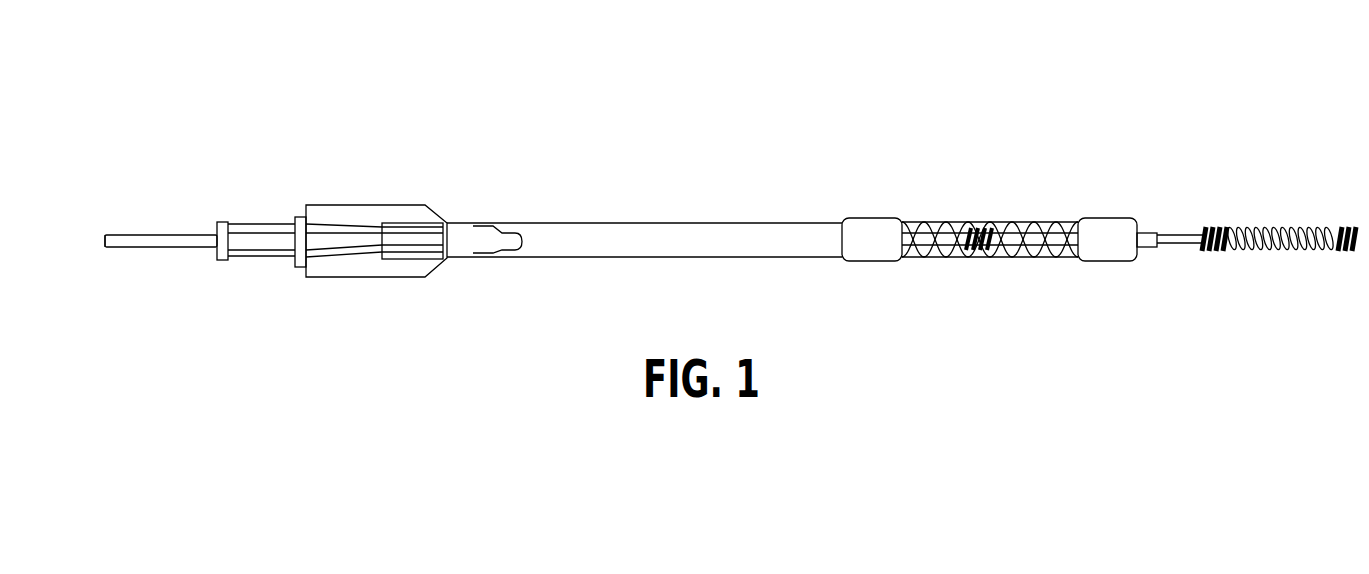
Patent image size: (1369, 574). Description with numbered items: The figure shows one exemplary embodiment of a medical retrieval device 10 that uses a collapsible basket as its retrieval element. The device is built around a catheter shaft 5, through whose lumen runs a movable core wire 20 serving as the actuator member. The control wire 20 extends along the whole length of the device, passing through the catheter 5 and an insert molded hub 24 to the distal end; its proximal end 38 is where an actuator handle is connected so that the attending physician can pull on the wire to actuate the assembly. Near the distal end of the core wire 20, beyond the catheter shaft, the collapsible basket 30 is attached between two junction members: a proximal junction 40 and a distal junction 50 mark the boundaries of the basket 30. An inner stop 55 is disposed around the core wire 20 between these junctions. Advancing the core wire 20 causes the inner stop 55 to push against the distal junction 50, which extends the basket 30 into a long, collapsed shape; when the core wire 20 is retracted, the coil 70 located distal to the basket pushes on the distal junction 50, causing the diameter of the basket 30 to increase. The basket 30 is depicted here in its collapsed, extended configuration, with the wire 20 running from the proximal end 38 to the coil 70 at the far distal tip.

The retrieval device 10 is at (243, 170).
The core wire 20 is at (133, 235).
The proximal end 38 is at (103, 240).
The insert molded hub 24 is at (372, 212).
The catheter shaft 5 is at (675, 223).
The proximal junction 40 is at (872, 230).
The basket 30 is at (938, 222).
The inner stop 55 is at (985, 258).
The distal junction 50 is at (1107, 230).
The coil 70 is at (1303, 226).